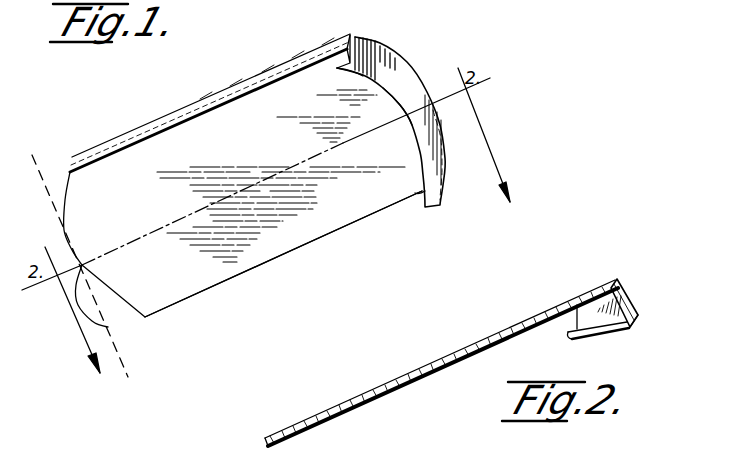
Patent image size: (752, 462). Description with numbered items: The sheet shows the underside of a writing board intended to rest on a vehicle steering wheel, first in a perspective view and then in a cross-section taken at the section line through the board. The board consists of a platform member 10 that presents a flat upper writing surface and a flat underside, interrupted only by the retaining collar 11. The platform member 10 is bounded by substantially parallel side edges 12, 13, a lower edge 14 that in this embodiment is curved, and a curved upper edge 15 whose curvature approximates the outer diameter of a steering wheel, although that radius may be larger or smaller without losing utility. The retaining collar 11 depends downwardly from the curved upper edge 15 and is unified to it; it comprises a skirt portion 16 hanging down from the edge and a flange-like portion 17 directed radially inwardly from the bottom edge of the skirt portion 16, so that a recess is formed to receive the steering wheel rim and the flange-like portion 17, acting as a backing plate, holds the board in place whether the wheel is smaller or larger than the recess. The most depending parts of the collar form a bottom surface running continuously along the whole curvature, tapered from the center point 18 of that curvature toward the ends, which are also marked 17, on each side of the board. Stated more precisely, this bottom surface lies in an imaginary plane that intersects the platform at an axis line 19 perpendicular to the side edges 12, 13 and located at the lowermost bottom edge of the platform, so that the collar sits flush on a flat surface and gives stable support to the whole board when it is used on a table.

In FIG. 1, the platform member 10 is at (157, 128).
In FIG. 2, the platform member 10 is at (452, 355).
In FIG. 1, the retaining collar 11 is at (347, 43).
In FIG. 1, the side edge 12 is at (217, 100).
In FIG. 1, the side edge 13 is at (253, 270).
In FIG. 1, the lower edge 14 is at (108, 327).
In FIG. 1, the curved upper edge 15 is at (405, 55).
In FIG. 2, the curved upper edge 15 is at (618, 280).
In FIG. 1, the skirt portion 16 is at (435, 108).
In FIG. 2, the skirt portion 16 is at (637, 296).
In FIG. 1, the flange-like portion 17 is at (350, 80).
In FIG. 2, the flange-like portion 17 is at (575, 342).
In FIG. 1, the center point 18 is at (420, 118).
In FIG. 2, the center point 18 is at (628, 325).
In FIG. 1, the axis line 19 is at (62, 217).